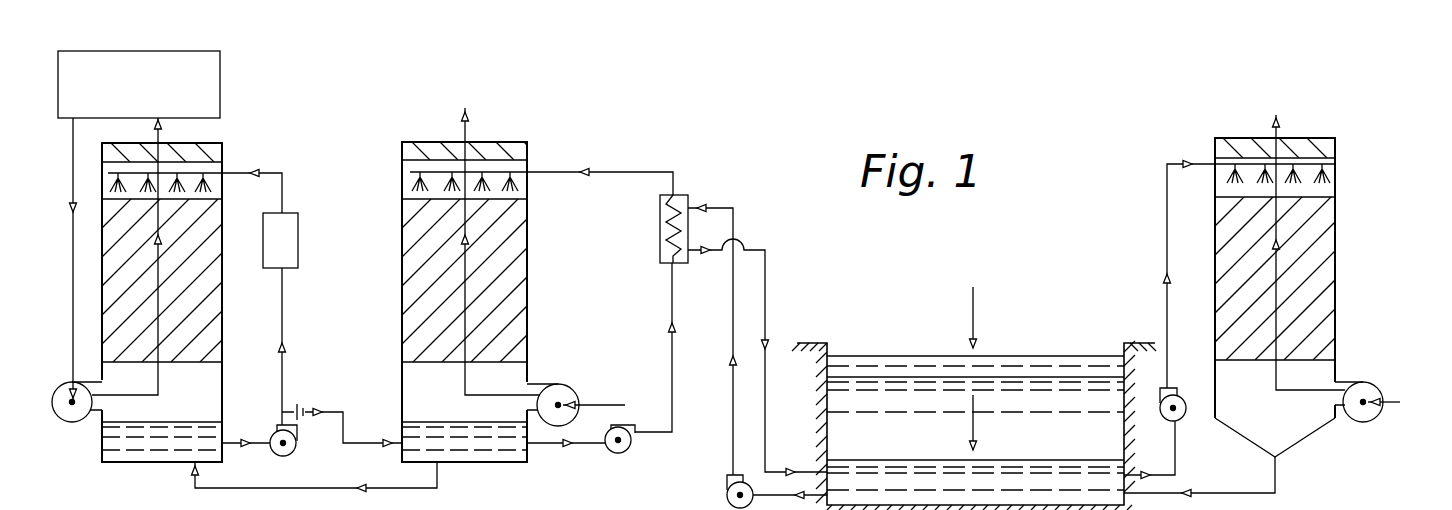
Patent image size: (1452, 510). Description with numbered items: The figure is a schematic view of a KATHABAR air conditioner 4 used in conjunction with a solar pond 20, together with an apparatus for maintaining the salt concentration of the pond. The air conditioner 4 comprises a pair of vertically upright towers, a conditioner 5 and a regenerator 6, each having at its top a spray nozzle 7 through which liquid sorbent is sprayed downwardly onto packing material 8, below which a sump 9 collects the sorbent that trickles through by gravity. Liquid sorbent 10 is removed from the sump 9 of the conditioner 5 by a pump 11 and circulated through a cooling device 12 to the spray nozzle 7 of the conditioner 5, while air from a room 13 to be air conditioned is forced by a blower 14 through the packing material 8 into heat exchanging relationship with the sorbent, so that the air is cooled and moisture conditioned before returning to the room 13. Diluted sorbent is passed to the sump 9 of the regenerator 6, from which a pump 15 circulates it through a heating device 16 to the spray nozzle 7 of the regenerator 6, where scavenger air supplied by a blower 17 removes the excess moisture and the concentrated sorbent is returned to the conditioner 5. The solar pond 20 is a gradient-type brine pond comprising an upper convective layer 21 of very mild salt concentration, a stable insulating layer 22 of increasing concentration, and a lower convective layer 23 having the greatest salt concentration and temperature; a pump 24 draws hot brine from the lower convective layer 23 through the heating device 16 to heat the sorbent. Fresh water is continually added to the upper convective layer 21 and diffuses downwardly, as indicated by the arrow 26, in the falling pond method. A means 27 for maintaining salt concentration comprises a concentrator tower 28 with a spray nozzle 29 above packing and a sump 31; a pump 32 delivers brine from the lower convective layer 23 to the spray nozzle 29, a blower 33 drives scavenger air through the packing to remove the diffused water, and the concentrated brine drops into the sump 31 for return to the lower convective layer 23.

The air conditioner 4 is at (318, 123).
The conditioner tower 5 is at (209, 137).
The regenerator tower 6 is at (503, 139).
The spray nozzle 7 is at (212, 172).
The packing material 8 is at (200, 303).
The sump 9 is at (222, 430).
The liquid sorbent 10 is at (155, 452).
The pump 11 is at (291, 455).
The cooling device 12 is at (298, 228).
The room 13 is at (220, 85).
The blower 14 is at (75, 422).
The pump 15 is at (623, 452).
The heating device 16 is at (660, 232).
The blower 17 is at (566, 386).
The solar pond 20 is at (1045, 345).
The upper convective layer 21 is at (848, 373).
The stable insulating layer 22 is at (873, 450).
The lower convective layer 23 is at (873, 498).
The pump 24 is at (727, 494).
The arrow 26 is at (973, 430).
The means for maintaining salt concentration 27 is at (1336, 235).
The concentrator tower 28 is at (1337, 145).
The spray nozzle 29 is at (1320, 164).
The sump 31 is at (1305, 437).
The pump 32 is at (1180, 395).
The blower 33 is at (1365, 383).